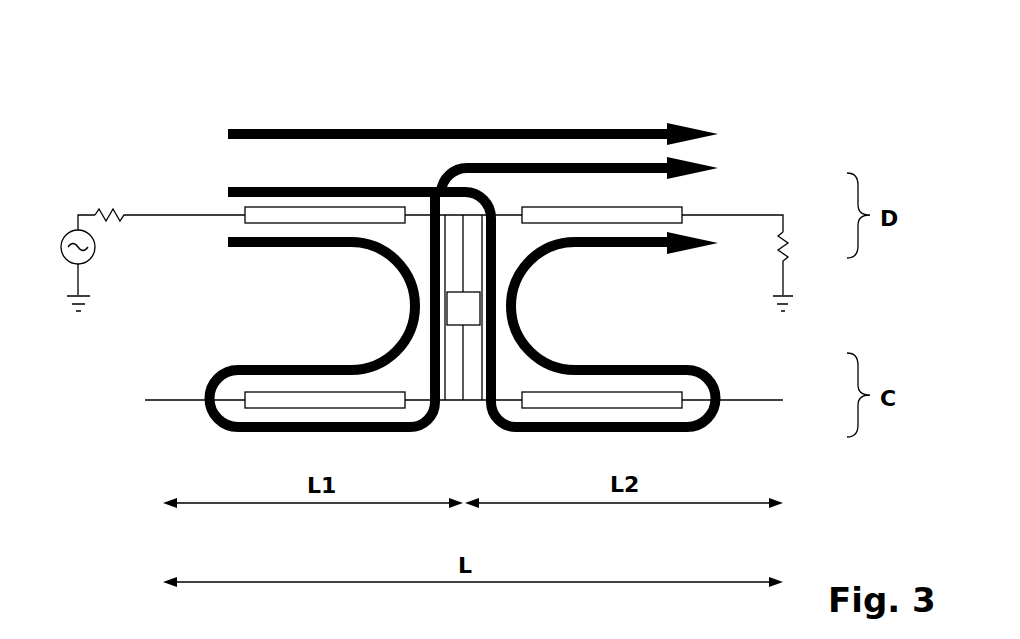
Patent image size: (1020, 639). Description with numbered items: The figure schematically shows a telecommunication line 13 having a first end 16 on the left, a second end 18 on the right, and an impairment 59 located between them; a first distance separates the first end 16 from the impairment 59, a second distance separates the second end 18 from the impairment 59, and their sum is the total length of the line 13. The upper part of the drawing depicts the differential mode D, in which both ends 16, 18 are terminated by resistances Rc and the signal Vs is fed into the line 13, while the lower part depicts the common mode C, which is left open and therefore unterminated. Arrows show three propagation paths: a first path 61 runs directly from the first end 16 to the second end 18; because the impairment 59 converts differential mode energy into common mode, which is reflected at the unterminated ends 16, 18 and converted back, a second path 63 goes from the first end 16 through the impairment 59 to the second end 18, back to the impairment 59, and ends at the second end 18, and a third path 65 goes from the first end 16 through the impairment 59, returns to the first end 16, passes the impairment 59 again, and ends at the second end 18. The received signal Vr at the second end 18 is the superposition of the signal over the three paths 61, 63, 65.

The line 13 is at (110, 36).
The first end 16 is at (155, 129).
The second end 18 is at (776, 143).
The impairment 59 is at (480, 292).
The first path 61 is at (313, 129).
The second path 63 is at (338, 187).
The third path 65 is at (537, 163).